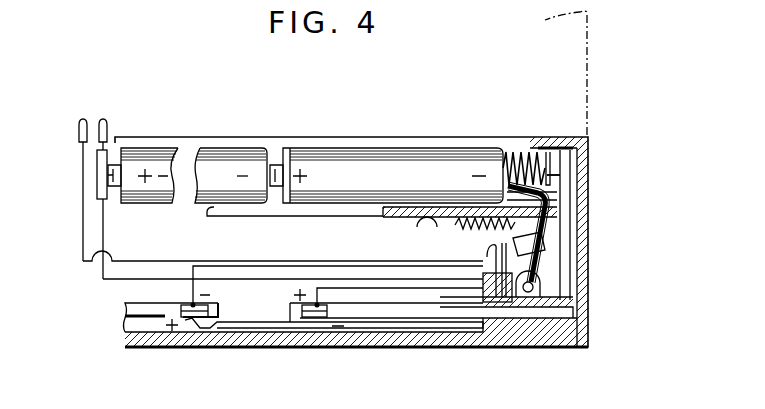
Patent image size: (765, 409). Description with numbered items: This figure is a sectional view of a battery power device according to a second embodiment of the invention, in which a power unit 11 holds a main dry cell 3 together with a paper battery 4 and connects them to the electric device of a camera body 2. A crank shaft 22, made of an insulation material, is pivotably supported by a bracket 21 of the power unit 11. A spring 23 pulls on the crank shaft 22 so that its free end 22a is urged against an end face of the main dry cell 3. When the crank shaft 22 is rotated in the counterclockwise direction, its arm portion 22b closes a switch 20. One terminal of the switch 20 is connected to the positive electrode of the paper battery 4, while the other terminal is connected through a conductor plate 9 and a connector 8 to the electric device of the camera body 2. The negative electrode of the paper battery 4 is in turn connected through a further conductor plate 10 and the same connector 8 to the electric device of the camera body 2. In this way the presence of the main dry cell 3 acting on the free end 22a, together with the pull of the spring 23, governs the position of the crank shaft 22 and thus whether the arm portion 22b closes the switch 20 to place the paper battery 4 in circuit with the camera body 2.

The camera body 2 is at (583, 98).
The main dry cell 3 is at (157, 150).
The paper battery 4 is at (167, 310).
The connector 8 is at (91, 115).
The conductor plate 9 is at (97, 183).
The conductor plate 10 is at (547, 153).
The power unit 11 is at (588, 250).
The switch 20 is at (483, 250).
The bracket 21 is at (547, 288).
The crank shaft 22 is at (550, 223).
The free end 22a is at (578, 192).
The arm portion 22b is at (540, 268).
The spring 23 is at (453, 221).